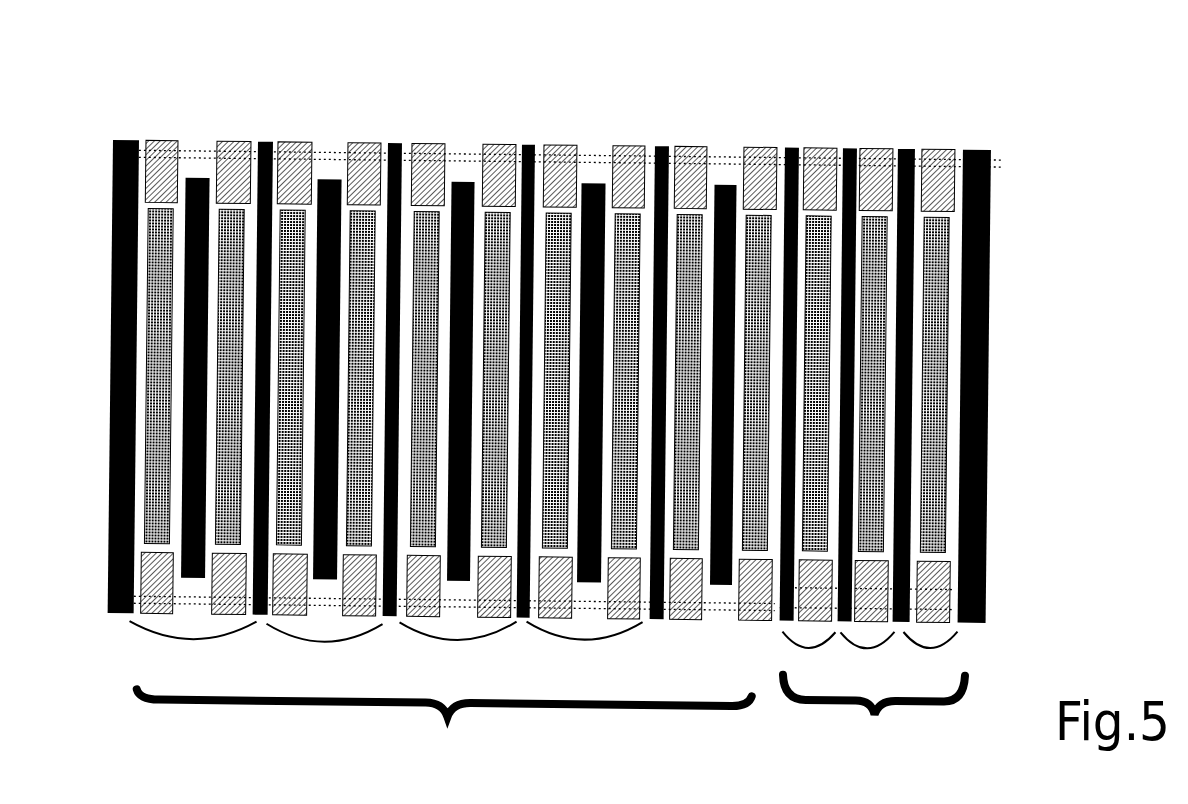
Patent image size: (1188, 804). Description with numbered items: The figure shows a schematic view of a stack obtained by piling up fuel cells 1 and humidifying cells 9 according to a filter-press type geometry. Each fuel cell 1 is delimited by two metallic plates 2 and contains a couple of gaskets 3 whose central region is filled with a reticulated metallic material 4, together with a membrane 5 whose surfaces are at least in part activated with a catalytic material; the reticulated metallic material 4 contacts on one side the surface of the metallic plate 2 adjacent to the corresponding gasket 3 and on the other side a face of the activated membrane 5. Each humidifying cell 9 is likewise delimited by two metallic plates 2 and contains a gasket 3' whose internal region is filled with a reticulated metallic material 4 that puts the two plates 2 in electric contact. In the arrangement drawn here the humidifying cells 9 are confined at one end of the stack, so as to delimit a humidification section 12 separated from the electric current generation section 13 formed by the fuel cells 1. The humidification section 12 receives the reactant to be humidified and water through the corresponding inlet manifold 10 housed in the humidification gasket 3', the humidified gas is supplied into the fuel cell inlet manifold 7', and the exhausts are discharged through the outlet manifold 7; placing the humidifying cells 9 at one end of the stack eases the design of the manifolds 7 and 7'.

The fuel cell 1 is at (386, 652).
The metallic plate 2 is at (120, 138).
The gasket 3 is at (460, 317).
The gasket 3' is at (898, 322).
The reticulated metallic material 4 is at (291, 216).
The membrane 5 is at (193, 175).
The outlet manifold 7 is at (688, 436).
The fuel cell inlet manifold 7' is at (572, 92).
The humidifying cell 9 is at (870, 659).
The inlet manifold 10 is at (917, 581).
The humidification section 12 is at (873, 714).
The electric current generation section 13 is at (444, 724).